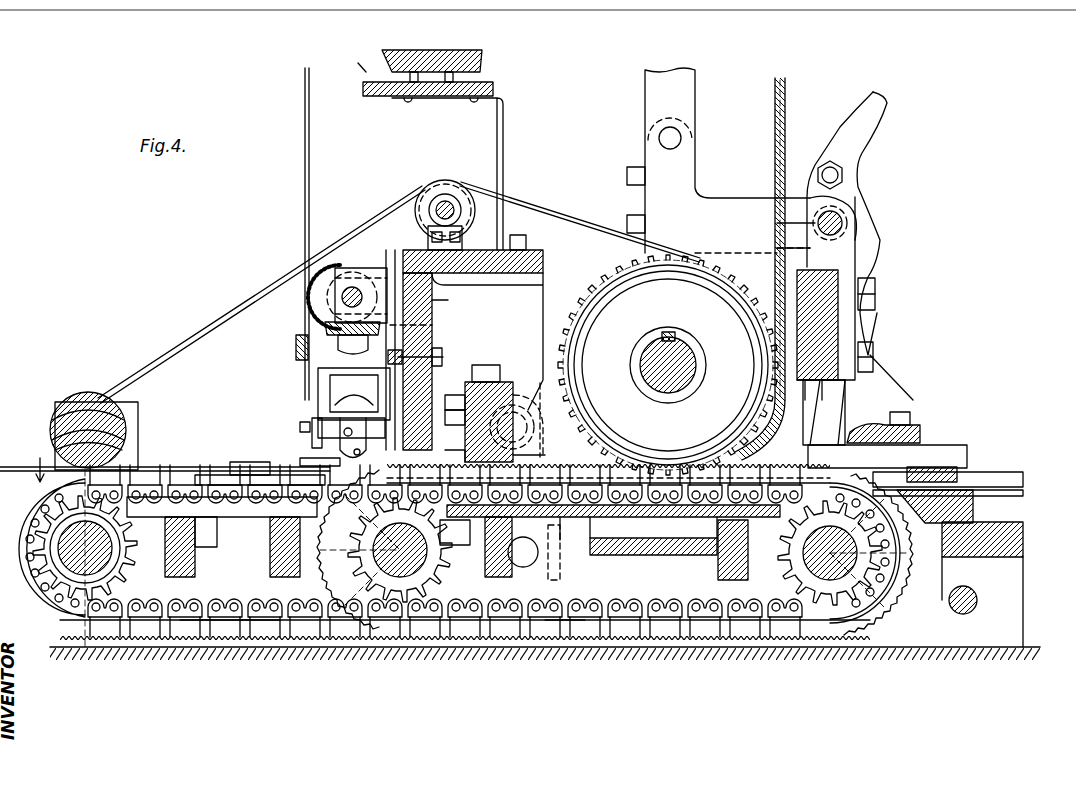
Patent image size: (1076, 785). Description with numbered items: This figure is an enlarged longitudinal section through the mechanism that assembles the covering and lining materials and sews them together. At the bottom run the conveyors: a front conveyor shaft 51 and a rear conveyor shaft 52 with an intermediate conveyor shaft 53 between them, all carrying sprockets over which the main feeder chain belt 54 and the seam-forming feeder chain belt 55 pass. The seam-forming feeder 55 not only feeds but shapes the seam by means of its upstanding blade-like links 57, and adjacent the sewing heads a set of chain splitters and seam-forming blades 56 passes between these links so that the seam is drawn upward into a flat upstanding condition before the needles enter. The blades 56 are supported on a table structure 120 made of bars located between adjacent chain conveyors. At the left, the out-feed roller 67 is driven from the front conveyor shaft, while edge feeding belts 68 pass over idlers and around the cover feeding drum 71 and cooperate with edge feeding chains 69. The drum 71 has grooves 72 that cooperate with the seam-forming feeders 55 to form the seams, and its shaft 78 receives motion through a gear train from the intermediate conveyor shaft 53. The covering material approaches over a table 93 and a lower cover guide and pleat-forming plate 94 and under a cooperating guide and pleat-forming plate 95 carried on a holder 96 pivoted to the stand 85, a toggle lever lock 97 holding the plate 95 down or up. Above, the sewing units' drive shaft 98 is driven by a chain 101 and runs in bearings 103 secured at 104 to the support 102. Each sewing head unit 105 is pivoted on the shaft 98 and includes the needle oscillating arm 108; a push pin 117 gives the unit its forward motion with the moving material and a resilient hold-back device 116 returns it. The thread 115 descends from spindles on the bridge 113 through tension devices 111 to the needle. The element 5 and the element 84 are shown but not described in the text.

The guide rail 5 is at (1000, 442).
The front conveyor shaft 51 is at (55, 535).
The rear conveyor shaft 52 is at (832, 575).
The intermediate conveyor shaft 53 is at (400, 575).
The main feeder chain belt 54 is at (228, 615).
The seam-forming feeder chain belt 55 is at (565, 616).
The chain splitters and seam-forming blades 56 is at (270, 517).
The upstanding blade-like links 57 is at (670, 618).
The out-feed roller 67 is at (50, 435).
The edge feeding belts 68 is at (210, 318).
The edge feeding chains 69 is at (215, 478).
The cover feeding drum 71 is at (628, 284).
The grooves 72 is at (592, 276).
The drum shaft 78 is at (697, 367).
The presser foot 84 is at (320, 456).
The stand 85 is at (652, 95).
The table 93 is at (1000, 496).
The lower cover guide and pleat-forming plate 94 is at (935, 510).
The upper guide and pleat-forming plate 95 is at (905, 445).
The holder 96 is at (825, 350).
The toggle lever lock 97 is at (868, 245).
The sewing units' drive shaft 98 is at (357, 292).
The chain 101 is at (328, 322).
The support 102 is at (520, 283).
The bearings 103 is at (398, 302).
The securing point 104 is at (400, 325).
The sewing head unit 105 is at (335, 380).
The needle oscillating arm 108 is at (335, 412).
The tension devices 111 is at (328, 444).
The bridge 113 is at (495, 92).
The thread 115 is at (305, 88).
The resilient hold-back device 116 is at (410, 357).
The push pin 117 is at (480, 372).
The table structure 120 is at (240, 505).